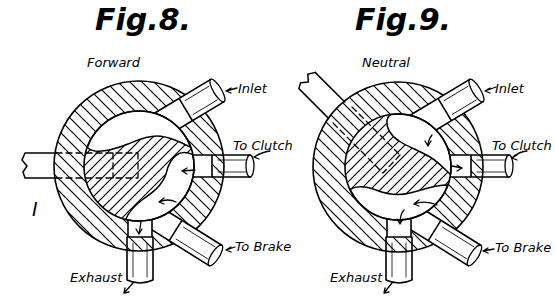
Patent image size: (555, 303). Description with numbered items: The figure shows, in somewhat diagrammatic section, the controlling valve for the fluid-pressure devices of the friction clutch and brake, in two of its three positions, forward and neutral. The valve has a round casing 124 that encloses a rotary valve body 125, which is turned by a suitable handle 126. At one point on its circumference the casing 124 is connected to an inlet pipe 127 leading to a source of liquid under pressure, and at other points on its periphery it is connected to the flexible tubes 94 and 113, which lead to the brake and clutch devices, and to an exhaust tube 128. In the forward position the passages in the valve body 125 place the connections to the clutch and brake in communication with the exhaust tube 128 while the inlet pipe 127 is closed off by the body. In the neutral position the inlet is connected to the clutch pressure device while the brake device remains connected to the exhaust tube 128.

In FIG. 8, the round casing 124 is at (165, 97).
In FIG. 9, the round casing 124 is at (423, 96).
In FIG. 8, the rotary valve body 125 is at (101, 146).
In FIG. 9, the rotary valve body 125 is at (357, 172).
In FIG. 8, the handle 126 is at (33, 151).
In FIG. 9, the handle 126 is at (325, 83).
In FIG. 8, the inlet pipe 127 is at (209, 80).
In FIG. 9, the inlet pipe 127 is at (468, 88).
In FIG. 8, the flexible tube 113 is at (236, 177).
In FIG. 9, the flexible tube 113 is at (497, 177).
In FIG. 8, the flexible tube 94 is at (215, 237).
In FIG. 9, the flexible tube 94 is at (474, 240).
In FIG. 8, the exhaust tube 128 is at (150, 270).
In FIG. 9, the exhaust tube 128 is at (398, 268).